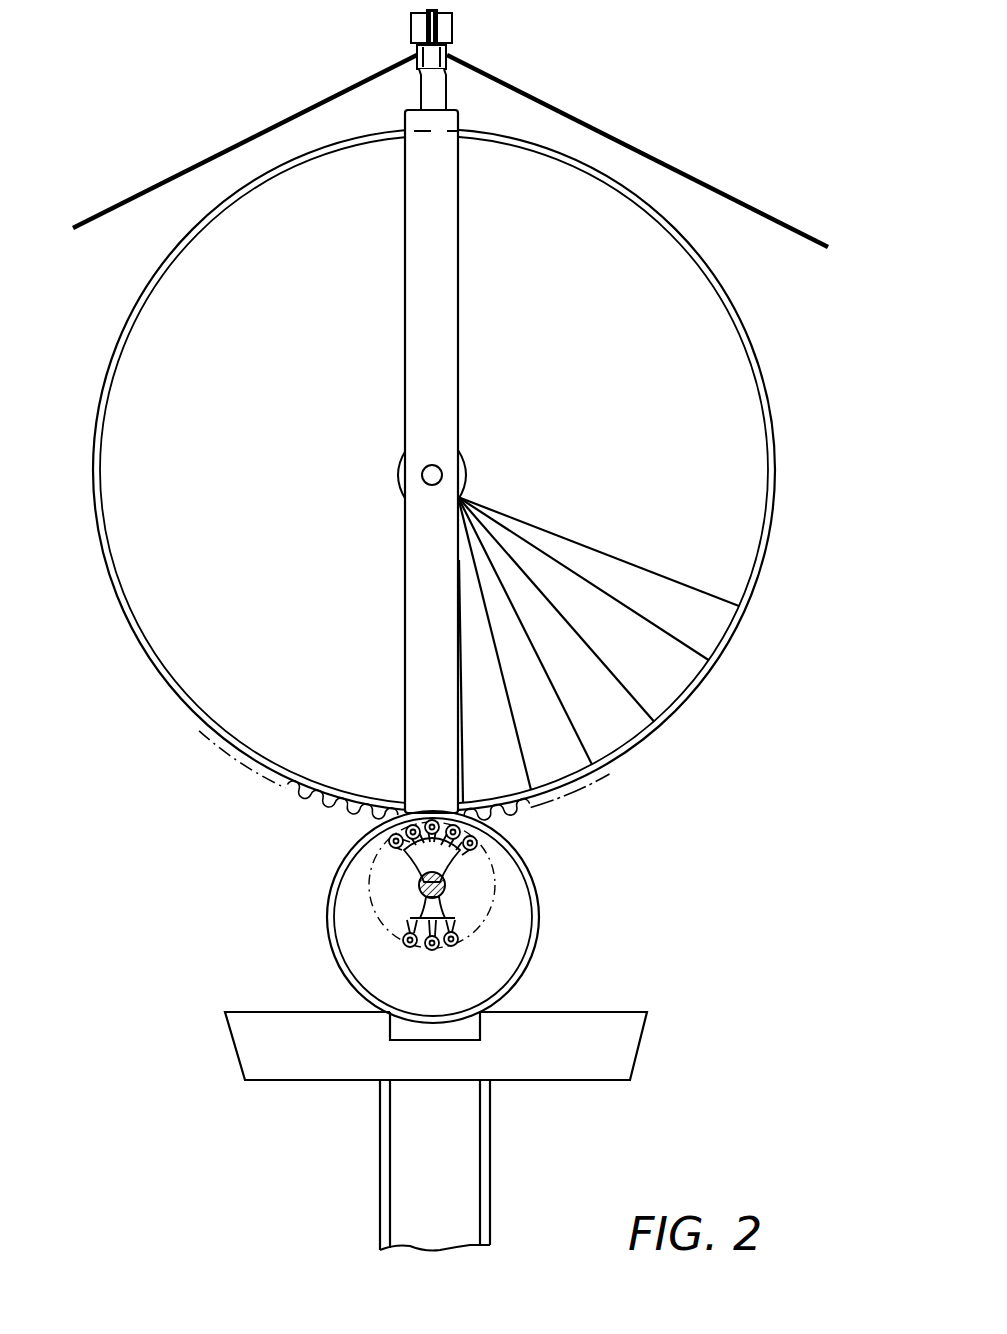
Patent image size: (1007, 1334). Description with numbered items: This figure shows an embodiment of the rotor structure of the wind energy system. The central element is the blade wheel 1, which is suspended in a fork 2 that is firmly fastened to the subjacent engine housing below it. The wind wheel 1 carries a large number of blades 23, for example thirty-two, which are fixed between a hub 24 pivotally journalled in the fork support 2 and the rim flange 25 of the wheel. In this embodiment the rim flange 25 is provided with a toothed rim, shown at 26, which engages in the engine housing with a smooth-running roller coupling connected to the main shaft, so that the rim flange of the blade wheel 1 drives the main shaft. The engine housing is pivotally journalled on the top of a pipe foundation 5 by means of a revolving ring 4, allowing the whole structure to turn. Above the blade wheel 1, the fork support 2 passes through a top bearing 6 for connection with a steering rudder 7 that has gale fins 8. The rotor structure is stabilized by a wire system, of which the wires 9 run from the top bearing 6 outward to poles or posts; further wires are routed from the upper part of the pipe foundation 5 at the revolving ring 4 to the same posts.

The blade wheel 1 is at (767, 397).
The fork 2 is at (440, 342).
The revolving ring 4 is at (463, 1025).
The pipe foundation 5 is at (385, 1125).
The top bearing 6 is at (450, 77).
The steering rudder 7 is at (412, 30).
The gale fins 8 is at (448, 32).
The wire 9 is at (720, 192).
The blades 23 is at (602, 545).
The hub 24 is at (468, 458).
The rim flange 25 is at (758, 547).
The toothed rim 26 is at (313, 808).